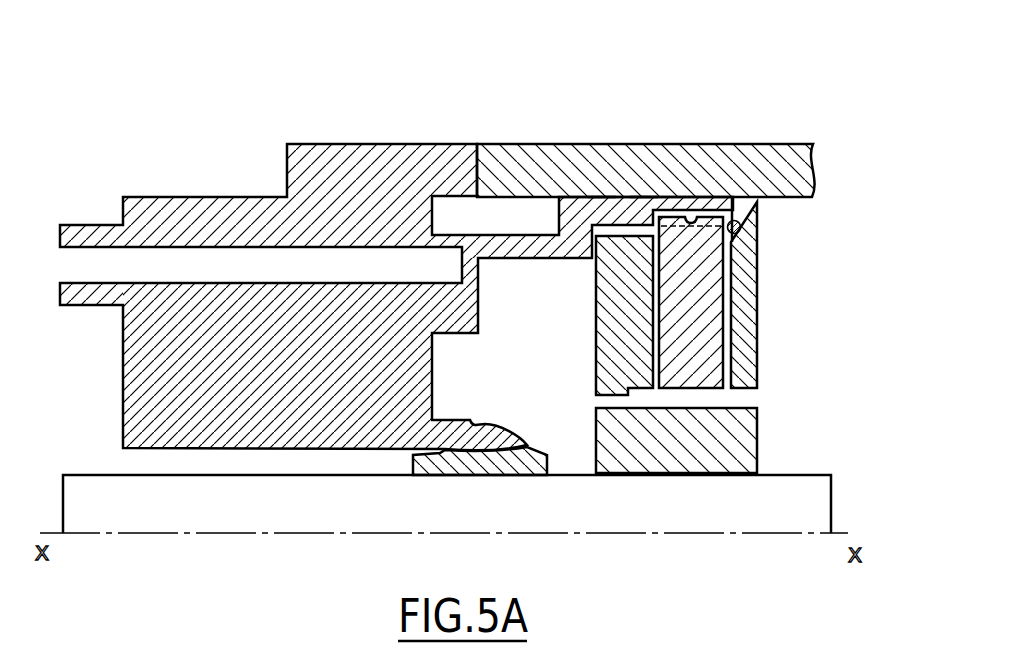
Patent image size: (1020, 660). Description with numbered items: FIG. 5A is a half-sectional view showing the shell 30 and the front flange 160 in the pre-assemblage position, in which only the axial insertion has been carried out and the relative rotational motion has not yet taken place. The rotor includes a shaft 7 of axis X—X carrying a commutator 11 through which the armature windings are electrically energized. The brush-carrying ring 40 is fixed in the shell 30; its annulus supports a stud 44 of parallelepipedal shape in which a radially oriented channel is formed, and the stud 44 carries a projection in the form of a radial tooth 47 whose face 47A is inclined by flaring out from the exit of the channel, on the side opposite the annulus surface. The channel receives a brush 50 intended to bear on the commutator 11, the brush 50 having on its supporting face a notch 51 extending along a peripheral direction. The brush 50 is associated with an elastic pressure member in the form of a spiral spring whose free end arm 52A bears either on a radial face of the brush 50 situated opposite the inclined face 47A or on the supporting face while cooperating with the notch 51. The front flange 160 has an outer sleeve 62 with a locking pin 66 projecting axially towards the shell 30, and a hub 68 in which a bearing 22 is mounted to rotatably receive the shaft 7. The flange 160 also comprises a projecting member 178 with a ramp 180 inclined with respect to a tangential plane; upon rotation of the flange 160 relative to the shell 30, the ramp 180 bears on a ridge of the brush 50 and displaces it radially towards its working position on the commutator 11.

The shaft 7 is at (818, 487).
The commutator 11 is at (748, 445).
The bearing 22 is at (535, 455).
The shell 30 is at (630, 100).
The brush-carrying ring 40 is at (790, 290).
The stud 44 is at (606, 350).
The radial tooth 47 is at (744, 258).
The inclined face 47A is at (736, 214).
The brush 50 is at (742, 318).
The notch 51 is at (690, 224).
The free end arm 52A is at (742, 223).
The outer sleeve 62 is at (197, 197).
The locking pin 66 is at (351, 150).
The hub 68 is at (473, 424).
The front flange 160 is at (159, 153).
The projecting member 178 is at (600, 197).
The ramp 180 is at (642, 197).